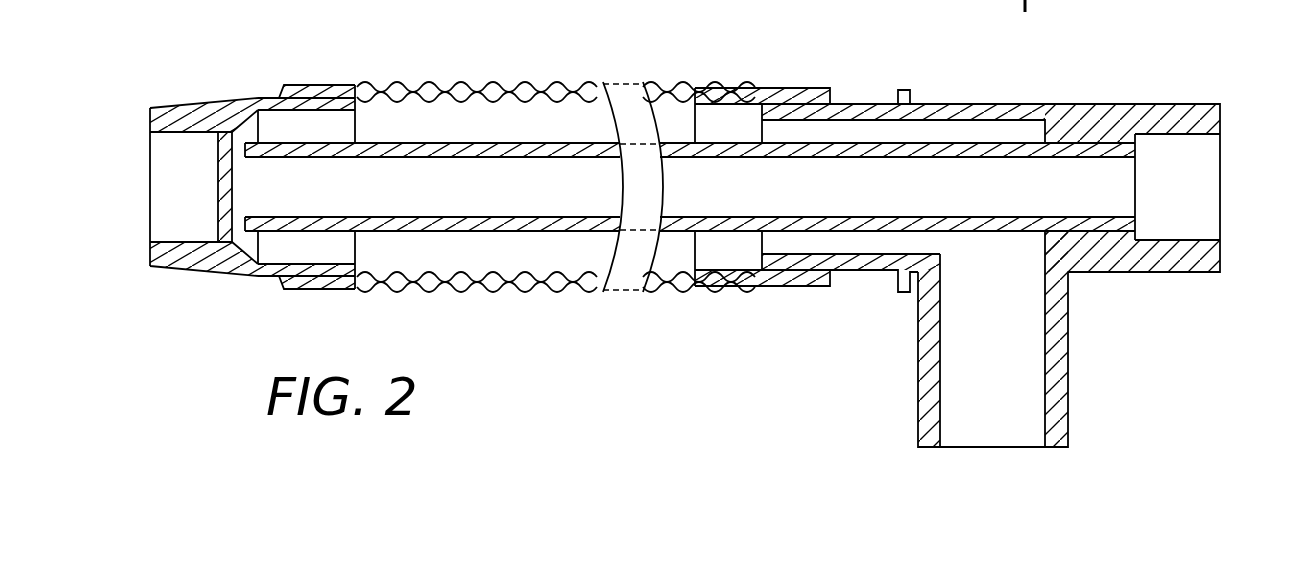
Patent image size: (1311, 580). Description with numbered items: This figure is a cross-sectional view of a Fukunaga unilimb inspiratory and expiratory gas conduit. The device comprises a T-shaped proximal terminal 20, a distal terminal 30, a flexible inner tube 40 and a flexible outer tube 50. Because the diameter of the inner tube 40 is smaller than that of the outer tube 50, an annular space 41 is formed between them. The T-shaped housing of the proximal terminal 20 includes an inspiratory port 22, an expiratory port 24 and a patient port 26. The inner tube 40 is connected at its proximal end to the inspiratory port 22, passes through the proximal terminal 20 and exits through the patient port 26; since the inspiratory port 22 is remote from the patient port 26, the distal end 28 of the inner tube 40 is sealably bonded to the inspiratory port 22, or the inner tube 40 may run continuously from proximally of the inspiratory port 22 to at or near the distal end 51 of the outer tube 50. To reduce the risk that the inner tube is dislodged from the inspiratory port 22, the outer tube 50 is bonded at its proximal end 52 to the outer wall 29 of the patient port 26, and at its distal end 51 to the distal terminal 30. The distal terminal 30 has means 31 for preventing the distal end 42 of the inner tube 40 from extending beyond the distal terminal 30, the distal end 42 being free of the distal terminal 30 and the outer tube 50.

The T-shaped proximal terminal 20 is at (1085, 110).
The inspiratory port 22 is at (1203, 173).
The expiratory port 24 is at (1018, 417).
The patient port 26 is at (773, 247).
The distal end of inner tube 28 is at (1125, 143).
The outer wall of patient port 29 is at (770, 277).
The distal terminal 30 is at (192, 104).
The means for preventing inner tube extension 31 is at (327, 253).
The flexible inner tube 40 is at (534, 143).
The annular space 41 is at (450, 113).
The distal end of inner tube 42 is at (277, 233).
The flexible outer tube 50 is at (407, 85).
The distal end of outer tube 51 is at (310, 85).
The proximal end of outer tube 52 is at (797, 88).